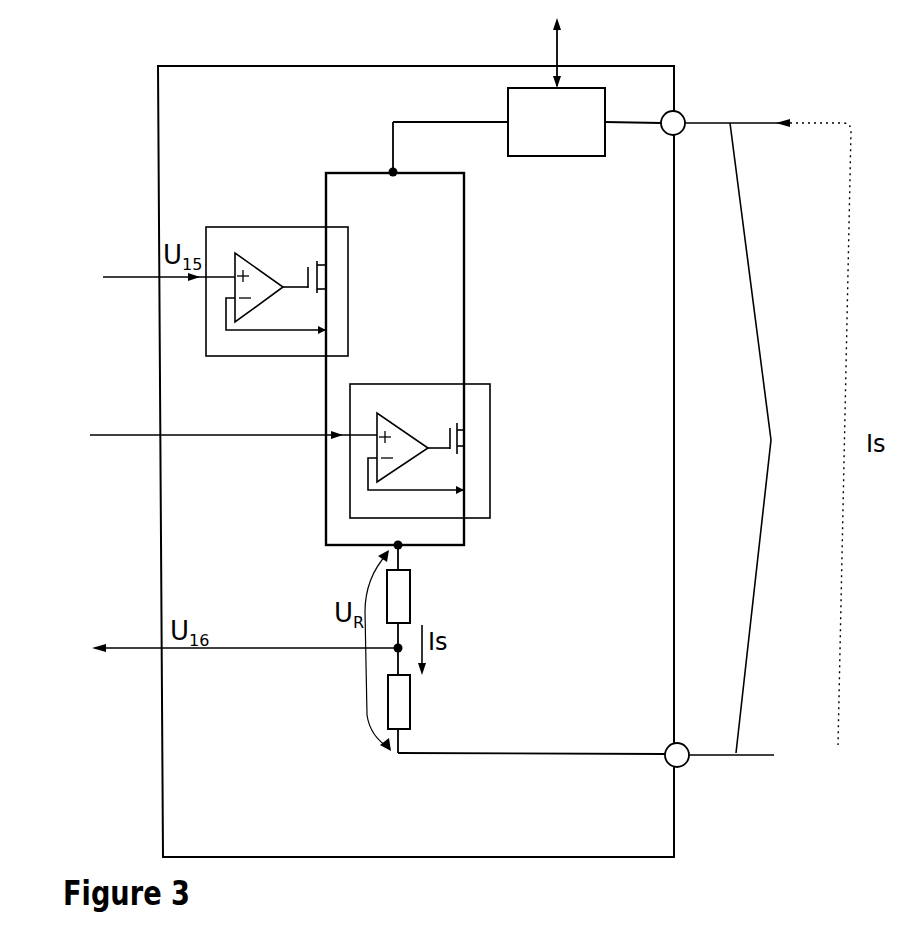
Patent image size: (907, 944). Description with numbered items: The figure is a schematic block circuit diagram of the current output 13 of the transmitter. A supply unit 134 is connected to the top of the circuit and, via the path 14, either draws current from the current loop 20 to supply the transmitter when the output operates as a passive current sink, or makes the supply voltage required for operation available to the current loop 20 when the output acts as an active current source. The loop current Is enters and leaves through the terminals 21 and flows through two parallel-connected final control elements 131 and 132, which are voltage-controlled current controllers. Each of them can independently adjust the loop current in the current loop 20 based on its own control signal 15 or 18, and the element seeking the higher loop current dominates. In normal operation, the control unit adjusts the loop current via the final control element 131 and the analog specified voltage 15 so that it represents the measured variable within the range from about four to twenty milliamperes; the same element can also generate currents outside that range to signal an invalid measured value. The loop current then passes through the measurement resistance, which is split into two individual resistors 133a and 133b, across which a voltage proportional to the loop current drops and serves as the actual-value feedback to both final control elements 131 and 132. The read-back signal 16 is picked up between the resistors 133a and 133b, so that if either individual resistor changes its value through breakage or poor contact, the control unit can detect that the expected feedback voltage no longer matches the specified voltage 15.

The current output 13 is at (678, 795).
The path 14 is at (573, 53).
The control signal 15 is at (162, 261).
The read-back signal 16 is at (244, 628).
The control signal 18 is at (233, 420).
The current loop 20 is at (772, 438).
The terminals 21 is at (719, 429).
The final control element 131 is at (253, 227).
The final control element 132 is at (490, 405).
The individual resistor 133a is at (398, 597).
The individual resistor 133b is at (398, 703).
The supply unit 134 is at (527, 130).